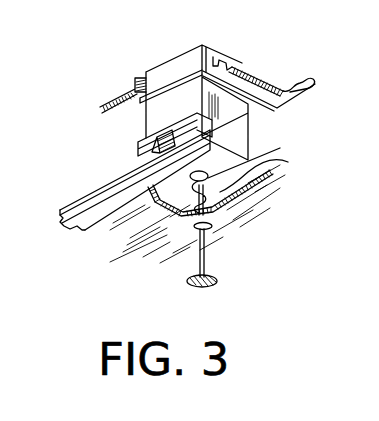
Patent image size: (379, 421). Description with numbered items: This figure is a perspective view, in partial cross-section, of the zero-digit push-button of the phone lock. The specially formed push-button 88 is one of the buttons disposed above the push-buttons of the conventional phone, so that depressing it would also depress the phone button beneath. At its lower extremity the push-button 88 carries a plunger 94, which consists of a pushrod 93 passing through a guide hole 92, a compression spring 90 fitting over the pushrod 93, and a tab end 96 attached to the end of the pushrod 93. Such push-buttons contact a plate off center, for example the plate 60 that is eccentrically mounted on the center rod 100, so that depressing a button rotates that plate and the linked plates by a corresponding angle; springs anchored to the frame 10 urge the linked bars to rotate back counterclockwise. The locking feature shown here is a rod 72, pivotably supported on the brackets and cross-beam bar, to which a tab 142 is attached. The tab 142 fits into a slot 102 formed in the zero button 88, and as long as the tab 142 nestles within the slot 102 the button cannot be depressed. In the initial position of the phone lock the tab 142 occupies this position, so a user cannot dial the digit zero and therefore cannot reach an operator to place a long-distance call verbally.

The frame 10 is at (258, 82).
The plate 60 is at (84, 226).
The rod 72 is at (110, 183).
The specially formed push-button 88 is at (250, 144).
The compression spring 90 is at (251, 183).
The guide hole 92 is at (262, 199).
The pushrod 93 is at (192, 250).
The plunger 94 is at (207, 259).
The tab end 96 is at (188, 282).
The rod 100 is at (252, 112).
The slot 102 is at (147, 138).
The tab 142 is at (157, 146).